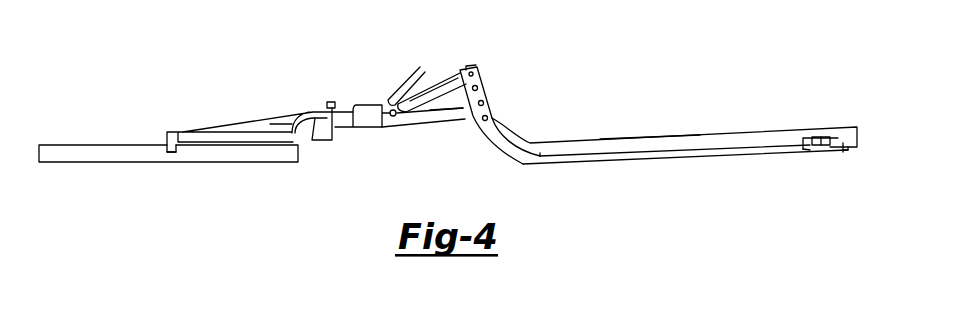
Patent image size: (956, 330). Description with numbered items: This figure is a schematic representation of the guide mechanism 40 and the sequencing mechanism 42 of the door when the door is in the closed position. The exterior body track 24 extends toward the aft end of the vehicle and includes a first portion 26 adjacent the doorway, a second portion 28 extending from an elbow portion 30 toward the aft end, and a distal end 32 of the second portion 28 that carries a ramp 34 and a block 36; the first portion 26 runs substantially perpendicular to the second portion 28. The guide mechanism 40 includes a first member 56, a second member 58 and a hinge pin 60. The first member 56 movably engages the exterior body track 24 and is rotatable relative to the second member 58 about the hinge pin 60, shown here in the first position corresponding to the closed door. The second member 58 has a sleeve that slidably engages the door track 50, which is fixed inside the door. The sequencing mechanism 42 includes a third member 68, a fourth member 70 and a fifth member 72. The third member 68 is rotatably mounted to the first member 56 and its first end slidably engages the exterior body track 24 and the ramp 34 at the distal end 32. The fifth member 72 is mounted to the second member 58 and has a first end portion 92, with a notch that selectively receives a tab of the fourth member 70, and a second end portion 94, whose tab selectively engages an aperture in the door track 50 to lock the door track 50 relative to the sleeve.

The exterior body track 24 is at (650, 132).
The first portion 26 is at (488, 86).
The second portion 28 is at (728, 135).
The elbow portion 30 is at (498, 152).
The distal end 32 is at (818, 136).
The ramp 34 is at (845, 154).
The block 36 is at (802, 154).
The guide mechanism 40 is at (414, 126).
The sequencing mechanism 42 is at (419, 72).
The door track 50 is at (68, 147).
The first member 56 is at (447, 119).
The second member 58 is at (267, 120).
The hinge pin 60 is at (380, 124).
The third member 68 is at (440, 84).
The fourth member 70 is at (417, 82).
The fifth member 72 is at (178, 131).
The first end portion 92 is at (331, 101).
The second end portion 94 is at (170, 163).